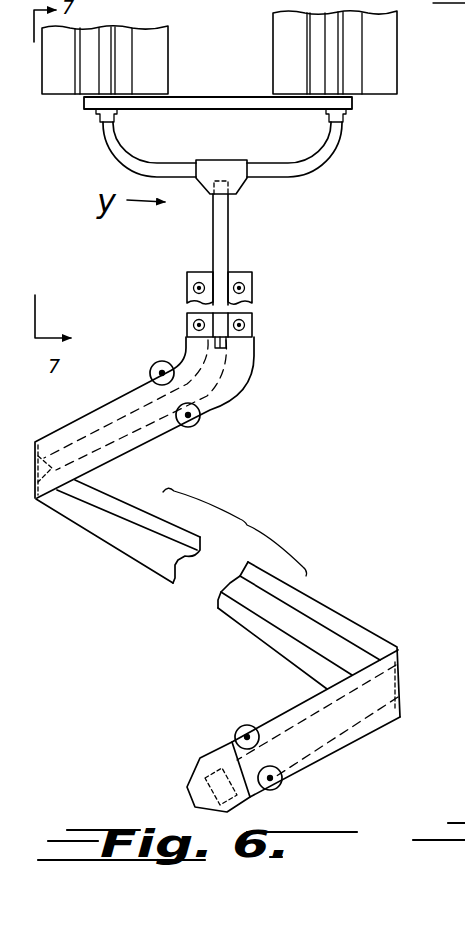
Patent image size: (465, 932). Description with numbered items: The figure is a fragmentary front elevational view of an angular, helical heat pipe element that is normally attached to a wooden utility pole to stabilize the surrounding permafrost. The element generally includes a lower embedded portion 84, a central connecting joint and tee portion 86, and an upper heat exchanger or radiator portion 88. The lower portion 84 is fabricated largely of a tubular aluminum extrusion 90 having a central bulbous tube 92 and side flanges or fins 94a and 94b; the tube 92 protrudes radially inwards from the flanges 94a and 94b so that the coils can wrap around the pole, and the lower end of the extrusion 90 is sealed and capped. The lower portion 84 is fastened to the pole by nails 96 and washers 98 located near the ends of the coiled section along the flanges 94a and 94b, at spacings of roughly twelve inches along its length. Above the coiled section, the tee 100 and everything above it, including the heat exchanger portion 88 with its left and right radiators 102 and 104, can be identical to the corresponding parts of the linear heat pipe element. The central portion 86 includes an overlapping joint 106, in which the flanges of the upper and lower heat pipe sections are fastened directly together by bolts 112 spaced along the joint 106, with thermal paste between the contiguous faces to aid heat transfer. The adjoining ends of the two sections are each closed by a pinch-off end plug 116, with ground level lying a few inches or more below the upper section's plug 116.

The lower embedded portion 84 is at (175, 417).
The central connecting joint and tee portion 86 is at (221, 201).
The upper heat exchanger (radiator) portion 88 is at (248, 52).
The tubular extrusion 90 is at (330, 606).
The central bulbous tube 92 is at (163, 558).
The side flange 94a is at (93, 403).
The side flange 94b is at (133, 447).
The nails 96 is at (158, 362).
The washers 98 is at (200, 418).
The tee 100 is at (232, 192).
The left radiator 102 is at (170, 44).
The right radiator 104 is at (272, 55).
The overlapping joint 106 is at (249, 297).
The bolts 112 is at (240, 274).
The pinch-off end plug 116 is at (228, 352).